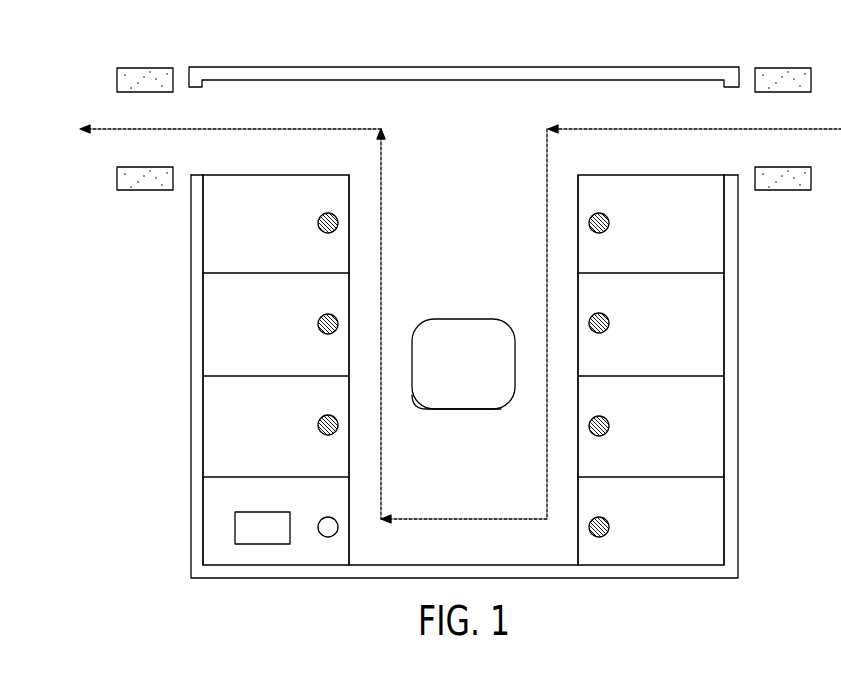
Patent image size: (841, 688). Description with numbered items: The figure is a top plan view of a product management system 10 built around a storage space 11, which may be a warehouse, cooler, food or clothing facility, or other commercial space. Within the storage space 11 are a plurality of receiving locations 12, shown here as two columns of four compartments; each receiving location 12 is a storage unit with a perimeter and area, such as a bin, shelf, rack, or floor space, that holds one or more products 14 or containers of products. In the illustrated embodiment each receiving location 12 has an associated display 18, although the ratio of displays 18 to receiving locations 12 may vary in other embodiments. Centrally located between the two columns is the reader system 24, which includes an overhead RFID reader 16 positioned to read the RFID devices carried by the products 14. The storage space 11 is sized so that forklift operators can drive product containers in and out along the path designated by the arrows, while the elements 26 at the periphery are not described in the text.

The product management system 10 is at (92, 247).
The storage space 11 is at (641, 578).
The receiving location 12 is at (212, 220).
The product 14 is at (260, 538).
The overhead RFID reader 16 is at (495, 400).
The display 18 is at (318, 221).
The reader system 24 is at (430, 401).
The mounting block 26 is at (142, 67).